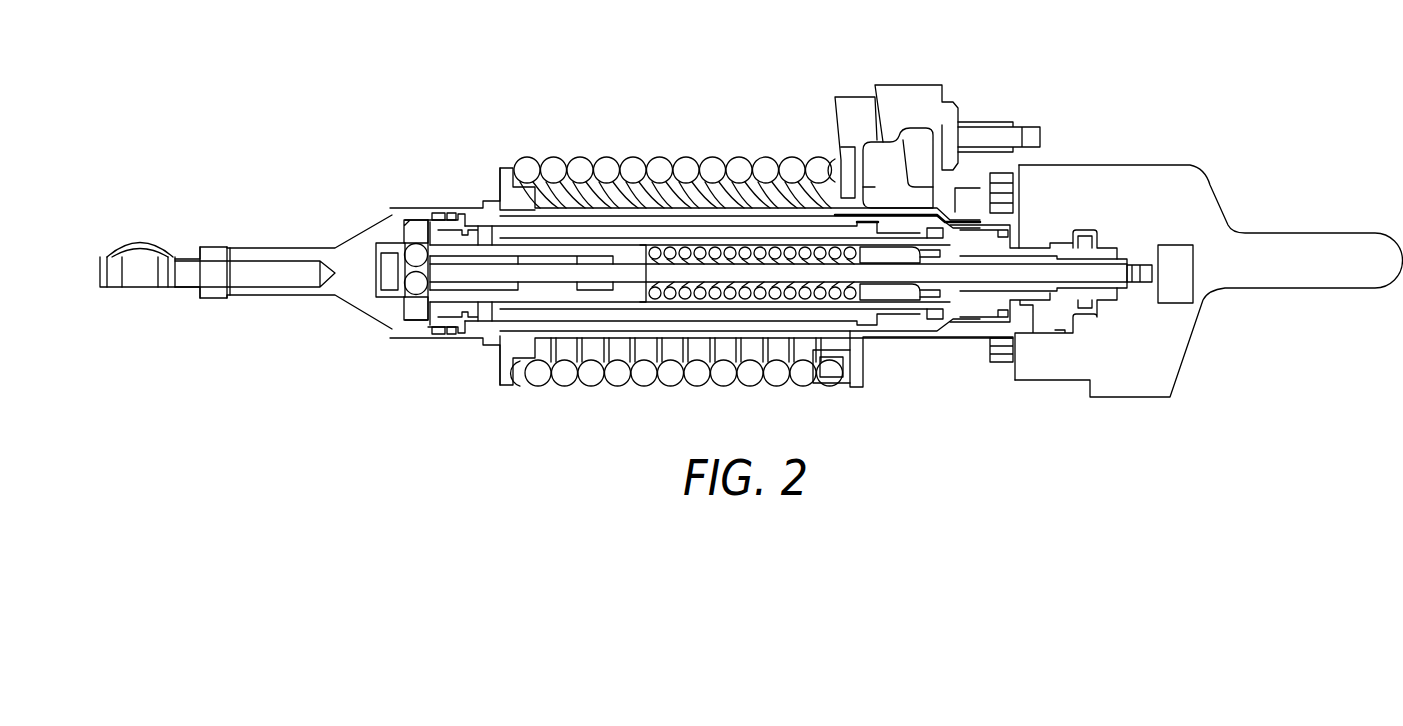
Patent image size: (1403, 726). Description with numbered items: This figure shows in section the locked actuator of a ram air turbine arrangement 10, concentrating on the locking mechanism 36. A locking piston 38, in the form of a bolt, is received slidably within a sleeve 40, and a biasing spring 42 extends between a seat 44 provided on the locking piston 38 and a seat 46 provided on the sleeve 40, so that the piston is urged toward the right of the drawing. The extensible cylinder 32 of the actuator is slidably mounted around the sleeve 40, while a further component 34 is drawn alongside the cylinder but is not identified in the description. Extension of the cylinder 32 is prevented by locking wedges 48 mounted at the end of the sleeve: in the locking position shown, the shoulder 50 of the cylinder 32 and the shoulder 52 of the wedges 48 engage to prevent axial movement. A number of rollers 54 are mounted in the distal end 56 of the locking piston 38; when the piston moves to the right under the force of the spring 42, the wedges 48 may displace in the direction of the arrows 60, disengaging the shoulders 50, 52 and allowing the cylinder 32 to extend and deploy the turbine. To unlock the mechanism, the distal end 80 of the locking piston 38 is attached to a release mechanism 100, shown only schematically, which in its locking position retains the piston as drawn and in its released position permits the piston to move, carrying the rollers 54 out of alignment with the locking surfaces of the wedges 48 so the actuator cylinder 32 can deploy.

The actuator assembly 10 is at (698, 108).
The extensible cylinder 32 is at (507, 203).
The outer spring upper section 34 is at (583, 172).
The locking mechanism 36 is at (700, 318).
The locking piston 38 is at (958, 283).
The sleeve 40 is at (632, 230).
The biasing spring 42 is at (785, 300).
The seat 44 is at (865, 300).
The seat 46 is at (660, 245).
The locking wedges 48 is at (414, 218).
The shoulder of the cylinder 50 is at (436, 334).
The shoulder of the locking wedges 52 is at (452, 334).
The rollers 54 is at (403, 245).
The distal end of the locking piston 56 is at (358, 298).
The arrows 60 is at (416, 162).
The distal end of the locking piston 80 is at (1150, 267).
The release mechanism 100 is at (1197, 257).